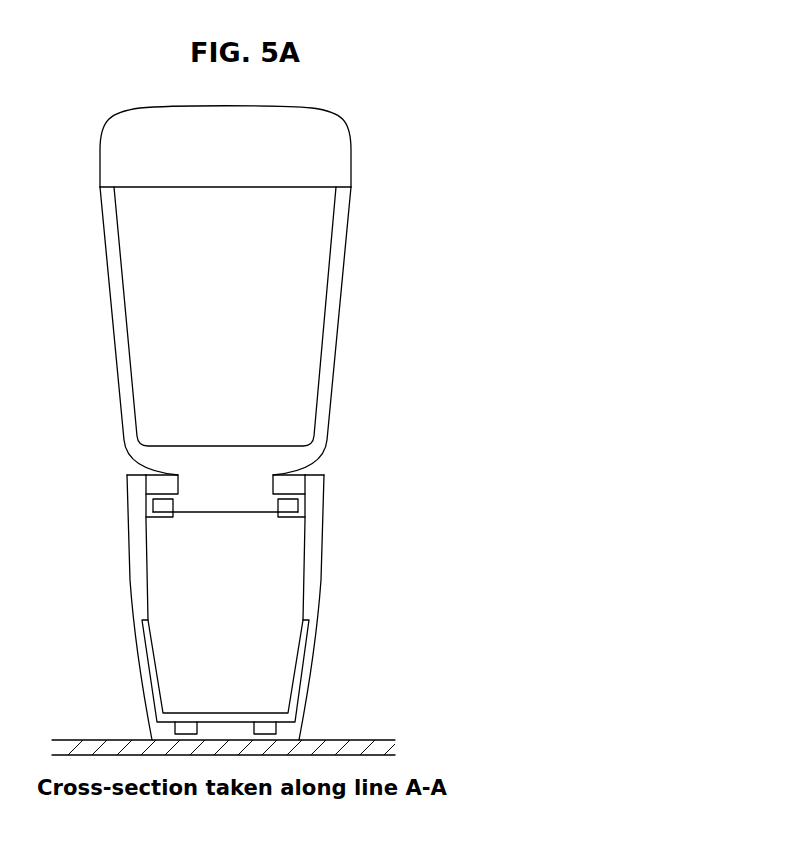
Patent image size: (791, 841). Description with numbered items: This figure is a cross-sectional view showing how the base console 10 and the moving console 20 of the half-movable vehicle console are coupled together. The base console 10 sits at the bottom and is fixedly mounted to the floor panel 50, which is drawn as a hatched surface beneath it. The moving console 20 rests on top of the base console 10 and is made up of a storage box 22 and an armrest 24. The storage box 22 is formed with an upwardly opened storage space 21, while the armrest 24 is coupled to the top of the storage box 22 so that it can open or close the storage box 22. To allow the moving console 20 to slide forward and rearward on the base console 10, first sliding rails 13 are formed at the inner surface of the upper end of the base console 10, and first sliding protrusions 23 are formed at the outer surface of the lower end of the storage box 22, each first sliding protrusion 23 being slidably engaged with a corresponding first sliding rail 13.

The base console 10 is at (281, 607).
The first sliding rail 13 is at (285, 514).
The moving console 20 is at (280, 309).
The storage space 21 is at (300, 267).
The storage box 22 is at (325, 397).
The first sliding protrusion 23 is at (288, 505).
The armrest 24 is at (335, 153).
The floor panel 50 is at (88, 748).